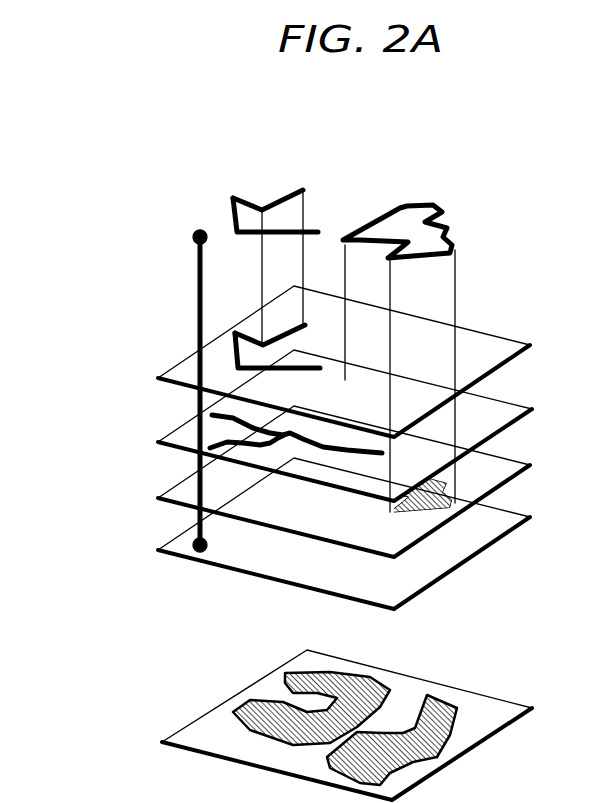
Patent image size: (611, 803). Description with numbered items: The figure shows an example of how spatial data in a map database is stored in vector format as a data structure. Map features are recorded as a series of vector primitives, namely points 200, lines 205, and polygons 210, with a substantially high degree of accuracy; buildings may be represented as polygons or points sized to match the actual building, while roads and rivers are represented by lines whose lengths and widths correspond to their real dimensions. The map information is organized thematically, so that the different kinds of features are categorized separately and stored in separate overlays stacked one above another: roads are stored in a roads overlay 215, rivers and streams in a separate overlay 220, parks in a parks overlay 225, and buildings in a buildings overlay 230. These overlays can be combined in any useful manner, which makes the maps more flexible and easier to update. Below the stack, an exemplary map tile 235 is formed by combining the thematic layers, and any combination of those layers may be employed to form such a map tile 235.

The points 200 is at (194, 237).
The lines 205 is at (246, 202).
The polygons 210 is at (440, 207).
The roads overlay 215 is at (497, 330).
The rivers and streams overlay 220 is at (522, 403).
The parks overlay 225 is at (522, 462).
The buildings overlay 230 is at (505, 522).
The map tile 235 is at (500, 708).